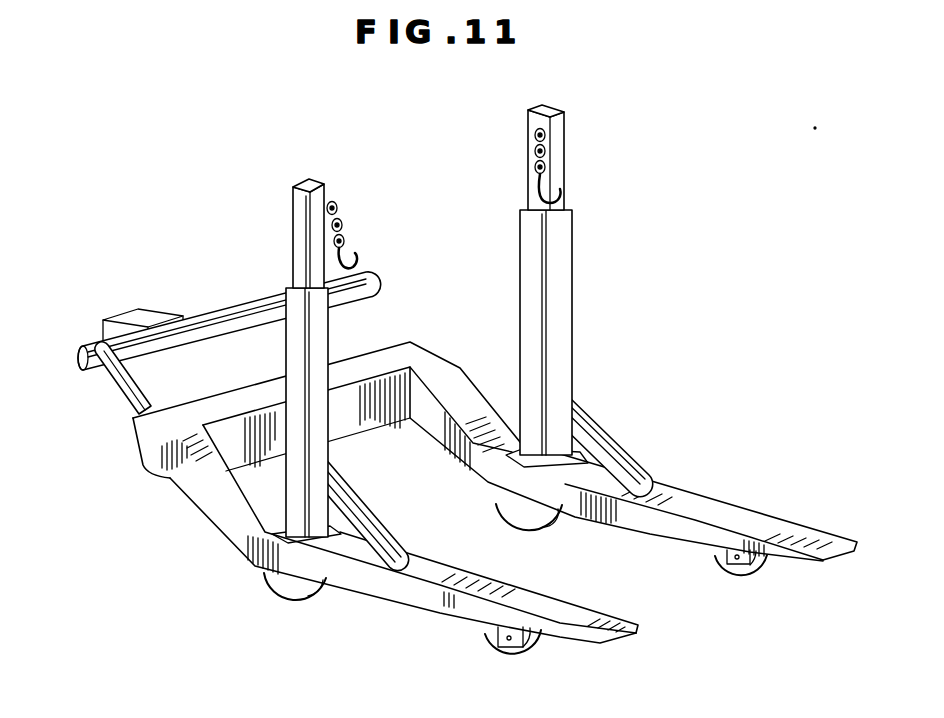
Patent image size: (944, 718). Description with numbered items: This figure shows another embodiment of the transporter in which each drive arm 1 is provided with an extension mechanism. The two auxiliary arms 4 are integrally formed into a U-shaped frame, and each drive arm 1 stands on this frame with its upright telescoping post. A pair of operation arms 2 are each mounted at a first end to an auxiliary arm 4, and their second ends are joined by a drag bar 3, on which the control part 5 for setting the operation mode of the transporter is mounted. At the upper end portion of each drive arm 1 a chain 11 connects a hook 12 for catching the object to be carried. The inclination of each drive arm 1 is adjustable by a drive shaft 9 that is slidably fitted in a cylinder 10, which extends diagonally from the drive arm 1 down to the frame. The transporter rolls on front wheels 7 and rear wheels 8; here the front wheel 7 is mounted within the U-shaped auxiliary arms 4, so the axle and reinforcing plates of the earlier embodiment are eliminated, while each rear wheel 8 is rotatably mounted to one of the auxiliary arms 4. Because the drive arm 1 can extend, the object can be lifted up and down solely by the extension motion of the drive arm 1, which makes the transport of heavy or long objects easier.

The drive arm 1 is at (278, 352).
The operation arm 2 is at (122, 392).
The drag bar 3 is at (193, 323).
The auxiliary arm 4 is at (217, 505).
The control part 5 is at (128, 318).
The front wheel 7 is at (283, 585).
The rear wheel 8 is at (497, 632).
The drive shaft 9 is at (568, 402).
The cylinder 10 is at (622, 463).
The chain 11 is at (343, 216).
The hook 12 is at (343, 256).